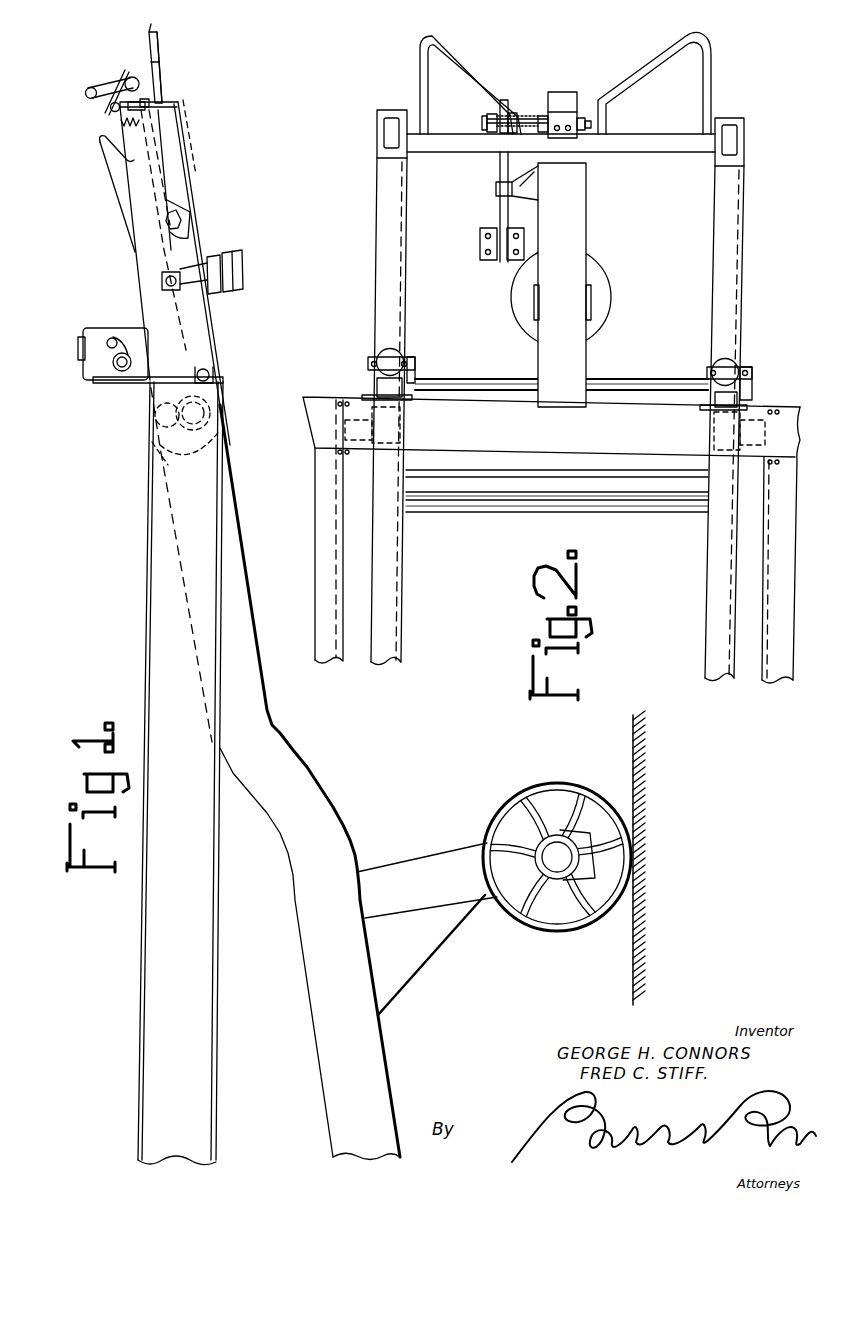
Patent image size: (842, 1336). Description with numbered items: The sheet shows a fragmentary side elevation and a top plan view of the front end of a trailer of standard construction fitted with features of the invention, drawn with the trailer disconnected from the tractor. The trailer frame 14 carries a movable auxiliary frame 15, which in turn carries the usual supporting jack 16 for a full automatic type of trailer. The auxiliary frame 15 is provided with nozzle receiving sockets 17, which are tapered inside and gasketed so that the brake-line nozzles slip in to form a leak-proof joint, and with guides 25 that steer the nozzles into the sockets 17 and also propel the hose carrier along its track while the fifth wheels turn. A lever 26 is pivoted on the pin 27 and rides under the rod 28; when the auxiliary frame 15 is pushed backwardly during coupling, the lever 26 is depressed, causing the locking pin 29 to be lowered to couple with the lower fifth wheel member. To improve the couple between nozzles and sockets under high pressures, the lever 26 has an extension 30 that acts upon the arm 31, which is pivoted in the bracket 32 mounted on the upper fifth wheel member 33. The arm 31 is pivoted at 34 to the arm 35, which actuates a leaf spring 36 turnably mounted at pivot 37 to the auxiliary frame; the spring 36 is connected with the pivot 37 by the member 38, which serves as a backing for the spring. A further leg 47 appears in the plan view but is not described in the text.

In FIG. 1, the trailer frame 14 is at (157, 570).
In FIG. 2, the trailer frame 14 is at (551, 530).
In FIG. 1, the movable auxiliary frame 15 is at (165, 85).
In FIG. 2, the movable auxiliary frame 15 is at (385, 220).
In FIG. 1, the supporting jack 16 is at (423, 867).
In FIG. 1, the nozzle receiving socket 17 is at (151, 100).
In FIG. 1, the guide 25 is at (158, 27).
In FIG. 2, the guide 25 is at (465, 47).
In FIG. 1, the lever 26 is at (100, 162).
In FIG. 2, the lever 26 is at (587, 198).
In FIG. 1, the pin 27 is at (210, 413).
In FIG. 1, the rod 28 is at (160, 418).
In FIG. 1, the locking pin 29 is at (227, 250).
In FIG. 2, the extension 30 is at (518, 183).
In FIG. 1, the arm 31 is at (184, 102).
In FIG. 2, the arm 31 is at (500, 213).
In FIG. 1, the bracket 32 is at (188, 216).
In FIG. 2, the bracket 32 is at (482, 244).
In FIG. 1, the upper fifth wheel member 33 is at (183, 147).
In FIG. 1, the pivot 34 is at (143, 98).
In FIG. 1, the arm 35 is at (91, 88).
In FIG. 1, the leaf spring 36 is at (128, 78).
In FIG. 2, the leaf spring 36 is at (557, 102).
In FIG. 1, the pivot 37 is at (115, 82).
In FIG. 2, the pivot 37 is at (530, 117).
In FIG. 1, the member 38 is at (110, 111).
In FIG. 2, the leg 47 is at (787, 517).